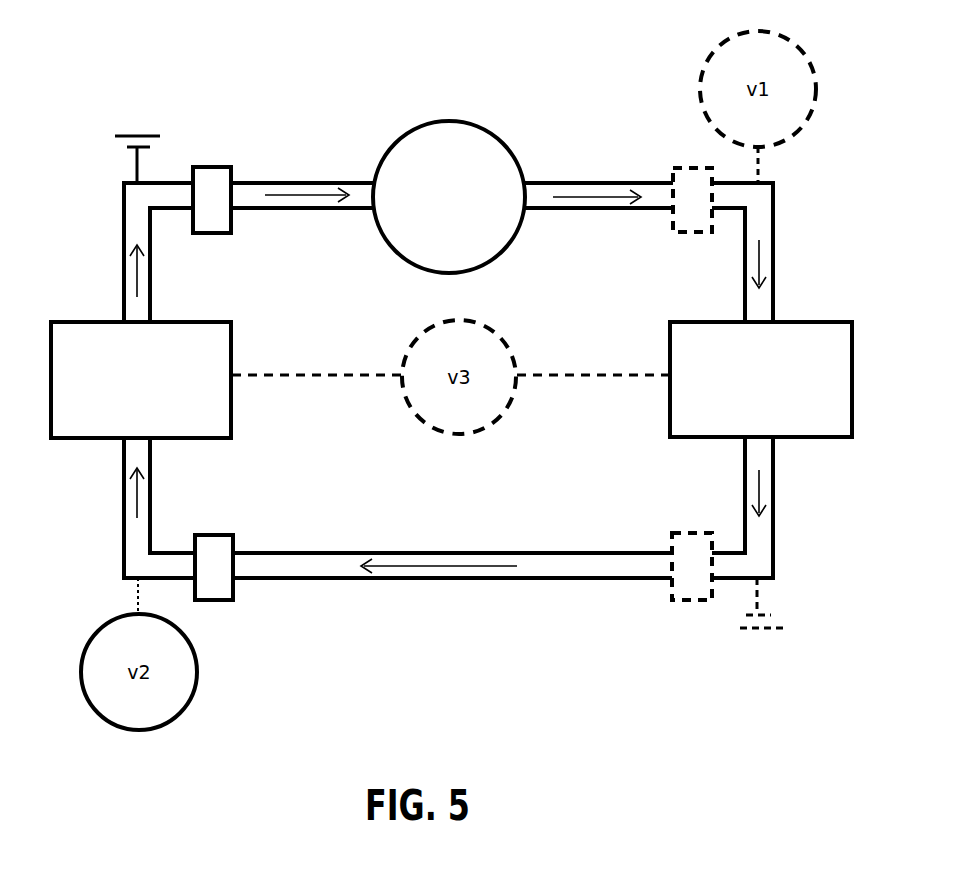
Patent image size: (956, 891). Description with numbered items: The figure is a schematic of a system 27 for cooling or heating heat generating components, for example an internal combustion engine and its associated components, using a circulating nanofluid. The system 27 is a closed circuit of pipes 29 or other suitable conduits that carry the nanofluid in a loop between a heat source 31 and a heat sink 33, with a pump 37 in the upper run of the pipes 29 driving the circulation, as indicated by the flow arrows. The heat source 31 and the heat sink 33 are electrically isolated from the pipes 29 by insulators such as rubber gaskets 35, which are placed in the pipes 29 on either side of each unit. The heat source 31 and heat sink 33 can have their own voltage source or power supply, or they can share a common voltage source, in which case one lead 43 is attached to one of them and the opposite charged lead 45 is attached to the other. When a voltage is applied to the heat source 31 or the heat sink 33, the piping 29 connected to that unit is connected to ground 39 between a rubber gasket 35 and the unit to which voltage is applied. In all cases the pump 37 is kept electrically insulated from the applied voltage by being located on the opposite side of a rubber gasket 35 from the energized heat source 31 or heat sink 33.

The system 27 is at (304, 156).
The pipes 29 is at (775, 277).
The heat source 31 is at (670, 348).
The heat sink 33 is at (232, 338).
The rubber gaskets 35 is at (218, 167).
The pump 37 is at (517, 233).
The ground 39 is at (116, 135).
The lead 43 is at (588, 377).
The opposite charged lead 45 is at (313, 377).